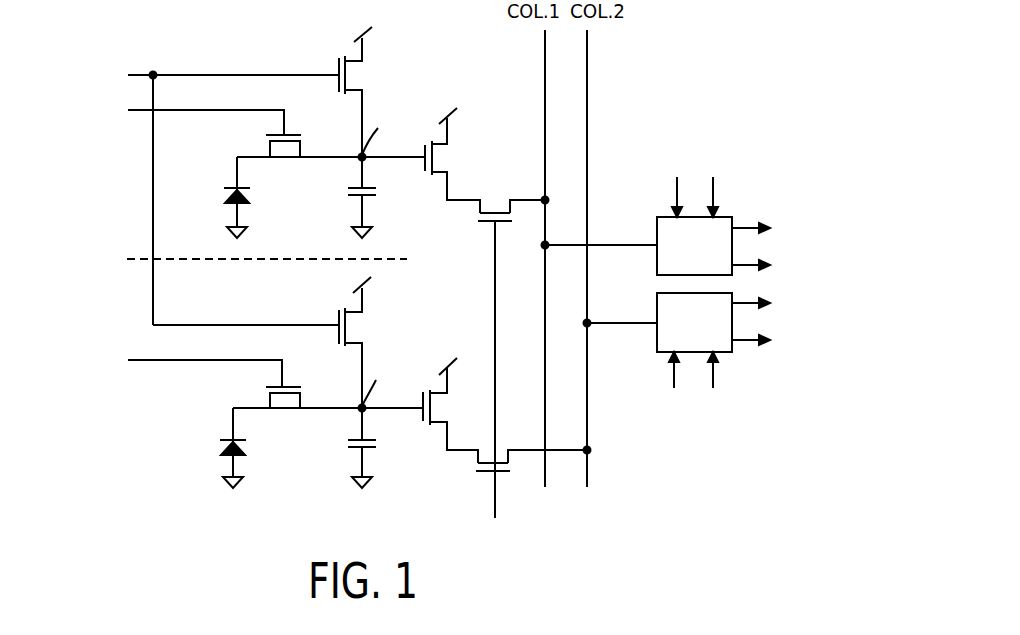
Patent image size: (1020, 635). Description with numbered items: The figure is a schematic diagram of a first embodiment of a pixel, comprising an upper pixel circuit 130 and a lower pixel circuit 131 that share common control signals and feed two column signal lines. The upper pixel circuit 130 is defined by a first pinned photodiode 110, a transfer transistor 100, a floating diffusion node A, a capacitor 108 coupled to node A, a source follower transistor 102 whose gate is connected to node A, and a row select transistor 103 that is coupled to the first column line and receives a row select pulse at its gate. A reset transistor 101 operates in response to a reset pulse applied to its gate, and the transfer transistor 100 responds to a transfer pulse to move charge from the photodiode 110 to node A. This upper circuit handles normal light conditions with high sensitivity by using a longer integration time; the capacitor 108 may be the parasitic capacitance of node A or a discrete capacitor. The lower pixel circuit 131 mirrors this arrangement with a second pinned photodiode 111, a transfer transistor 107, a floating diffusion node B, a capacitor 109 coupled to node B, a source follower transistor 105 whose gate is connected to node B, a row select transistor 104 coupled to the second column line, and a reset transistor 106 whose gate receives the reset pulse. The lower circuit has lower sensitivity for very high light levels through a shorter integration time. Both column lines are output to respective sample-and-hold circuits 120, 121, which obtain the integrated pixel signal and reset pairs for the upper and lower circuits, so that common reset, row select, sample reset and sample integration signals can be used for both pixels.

The transfer transistor 100 is at (293, 134).
The reset transistor 101 is at (338, 72).
The source follower transistor 102 is at (425, 148).
The row select transistor 103 is at (487, 227).
The row select transistor 104 is at (490, 472).
The source follower transistor 105 is at (423, 400).
The reset transistor 106 is at (338, 322).
The transfer transistor 107 is at (293, 385).
The capacitor 108 is at (376, 197).
The capacitor 109 is at (376, 448).
The pinned photodiode PPD1 110 is at (250, 194).
The pinned photodiode PPD2 111 is at (250, 445).
The sample-and-hold circuit 120 is at (657, 230).
The sample-and-hold circuit 121 is at (657, 335).
The upper pixel circuit 130 is at (123, 182).
The lower pixel circuit 131 is at (123, 393).